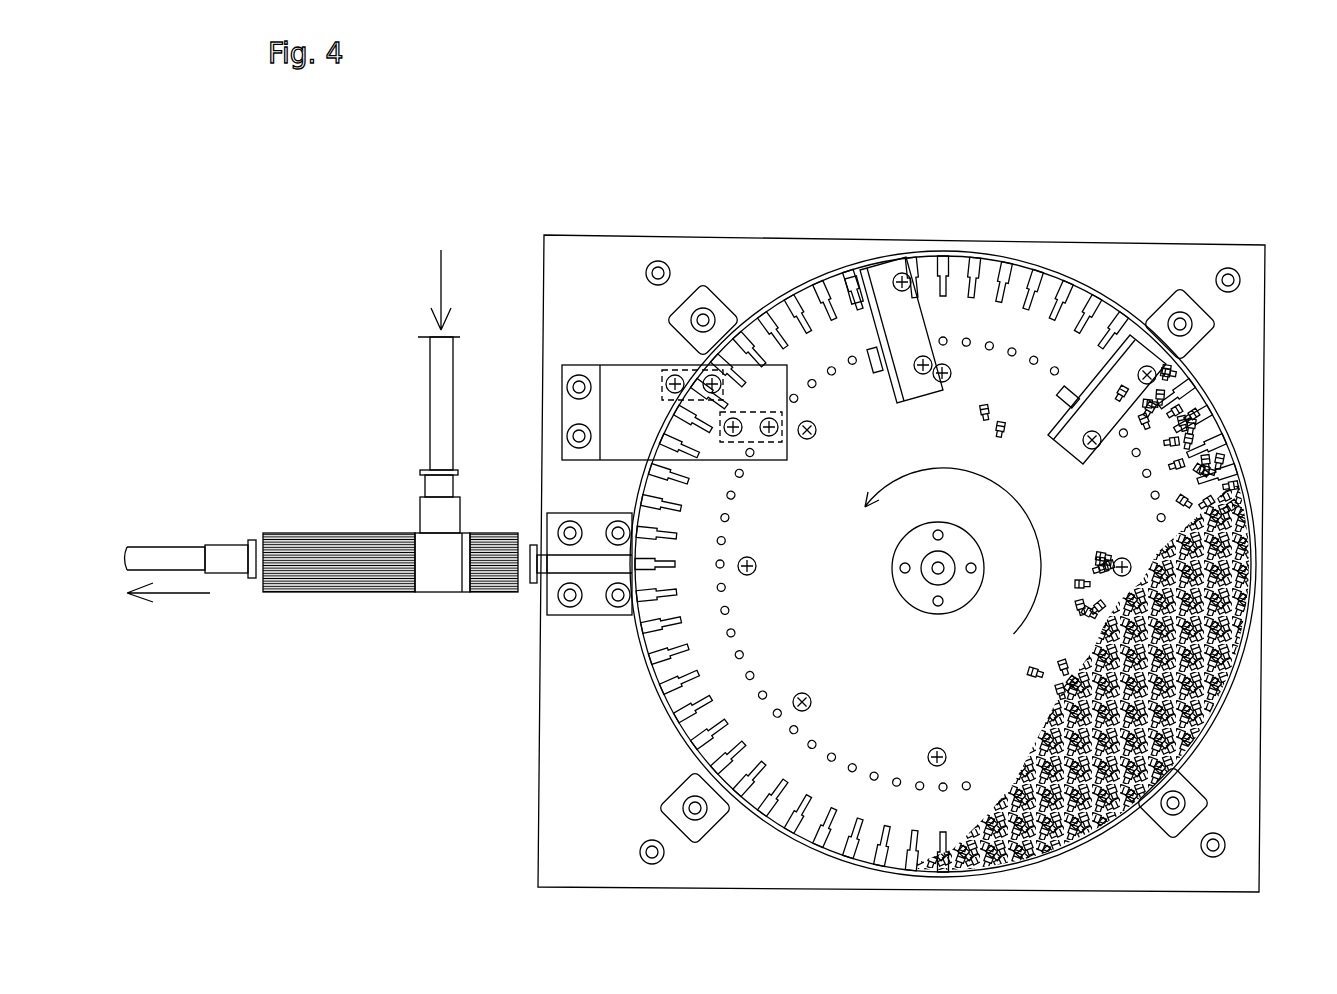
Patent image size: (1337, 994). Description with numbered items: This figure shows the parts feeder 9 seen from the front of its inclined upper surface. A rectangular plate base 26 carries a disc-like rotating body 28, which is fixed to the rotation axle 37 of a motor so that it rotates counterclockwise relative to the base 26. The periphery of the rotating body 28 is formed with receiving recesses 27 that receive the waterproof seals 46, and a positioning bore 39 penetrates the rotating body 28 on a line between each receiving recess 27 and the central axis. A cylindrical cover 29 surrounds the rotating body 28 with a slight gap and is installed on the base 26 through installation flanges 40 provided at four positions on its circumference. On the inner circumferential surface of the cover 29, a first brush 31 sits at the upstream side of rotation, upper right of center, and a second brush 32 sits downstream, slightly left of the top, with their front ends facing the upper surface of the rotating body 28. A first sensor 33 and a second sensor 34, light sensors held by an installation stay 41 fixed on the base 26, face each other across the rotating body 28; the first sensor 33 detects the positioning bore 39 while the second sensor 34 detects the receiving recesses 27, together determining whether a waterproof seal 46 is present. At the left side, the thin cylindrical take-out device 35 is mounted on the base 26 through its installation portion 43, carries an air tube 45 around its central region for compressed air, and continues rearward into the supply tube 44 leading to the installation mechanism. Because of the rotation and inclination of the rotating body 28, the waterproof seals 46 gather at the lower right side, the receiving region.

The parts feeder 9 is at (257, 229).
The base 26 is at (568, 795).
The receiving recesses 27 is at (842, 862).
The rotating body 28 is at (725, 675).
The cover 29 is at (1208, 397).
The first brush 31 is at (1128, 372).
The second brush 32 is at (883, 290).
The first sensor 33 is at (750, 443).
The second sensor 34 is at (660, 382).
The take-out device 35 is at (398, 609).
The rotation axle 37 is at (923, 563).
The positioning bore 39 is at (868, 778).
The installation flanges 40 is at (725, 312).
The installation stay 41 is at (630, 392).
The installation portion 43 is at (588, 565).
The supply tube 44 is at (172, 558).
The air tube 45 is at (440, 395).
The waterproof seal 46 is at (1060, 273).